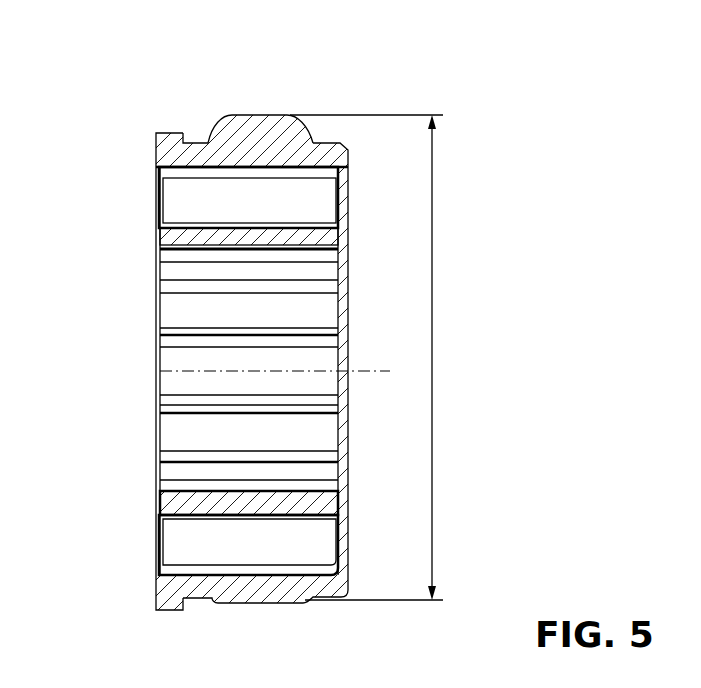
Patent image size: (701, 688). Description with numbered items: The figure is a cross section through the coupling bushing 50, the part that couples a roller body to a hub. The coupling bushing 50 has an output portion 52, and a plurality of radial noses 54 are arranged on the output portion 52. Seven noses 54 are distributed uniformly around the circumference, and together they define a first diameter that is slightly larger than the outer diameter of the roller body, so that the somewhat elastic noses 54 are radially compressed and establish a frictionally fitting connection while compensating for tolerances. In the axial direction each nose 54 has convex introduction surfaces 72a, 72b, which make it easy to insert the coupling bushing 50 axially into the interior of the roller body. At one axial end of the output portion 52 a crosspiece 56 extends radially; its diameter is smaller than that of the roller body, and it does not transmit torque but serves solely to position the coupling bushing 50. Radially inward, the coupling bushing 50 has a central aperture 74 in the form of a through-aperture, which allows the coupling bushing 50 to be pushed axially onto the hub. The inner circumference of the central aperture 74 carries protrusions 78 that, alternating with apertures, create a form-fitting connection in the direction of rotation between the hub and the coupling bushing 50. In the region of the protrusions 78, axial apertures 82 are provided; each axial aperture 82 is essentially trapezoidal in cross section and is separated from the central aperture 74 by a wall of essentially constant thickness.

The coupling bushing 50 is at (281, 314).
The output portion 52 is at (327, 143).
The radial nose 54 is at (268, 140).
The crosspiece 56 is at (172, 132).
The introduction surface 72a is at (222, 121).
The introduction surface 72b is at (309, 140).
The central aperture 74 is at (184, 312).
The protrusion 78 is at (170, 238).
The axial aperture 82 is at (187, 203).